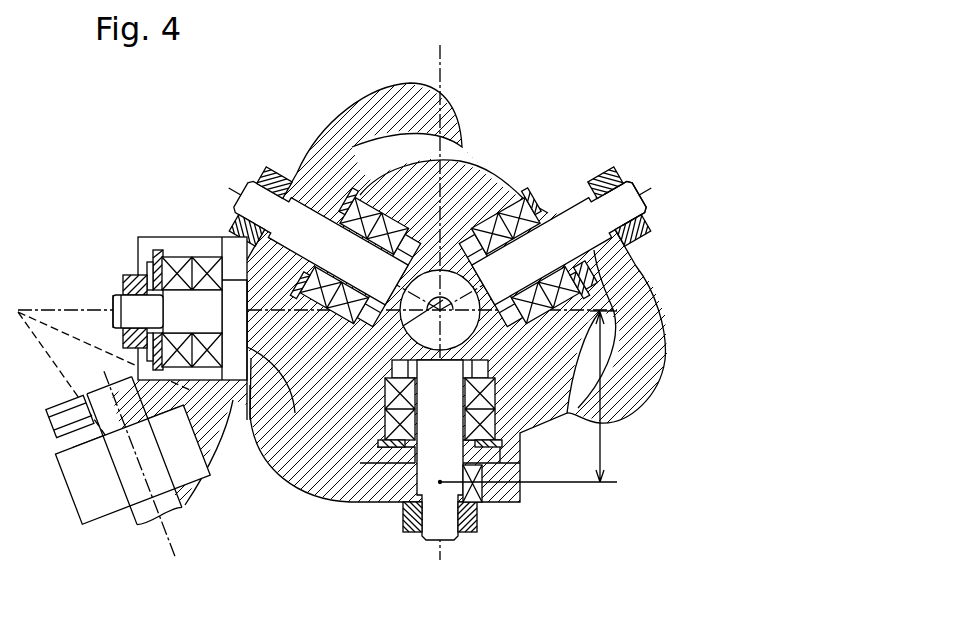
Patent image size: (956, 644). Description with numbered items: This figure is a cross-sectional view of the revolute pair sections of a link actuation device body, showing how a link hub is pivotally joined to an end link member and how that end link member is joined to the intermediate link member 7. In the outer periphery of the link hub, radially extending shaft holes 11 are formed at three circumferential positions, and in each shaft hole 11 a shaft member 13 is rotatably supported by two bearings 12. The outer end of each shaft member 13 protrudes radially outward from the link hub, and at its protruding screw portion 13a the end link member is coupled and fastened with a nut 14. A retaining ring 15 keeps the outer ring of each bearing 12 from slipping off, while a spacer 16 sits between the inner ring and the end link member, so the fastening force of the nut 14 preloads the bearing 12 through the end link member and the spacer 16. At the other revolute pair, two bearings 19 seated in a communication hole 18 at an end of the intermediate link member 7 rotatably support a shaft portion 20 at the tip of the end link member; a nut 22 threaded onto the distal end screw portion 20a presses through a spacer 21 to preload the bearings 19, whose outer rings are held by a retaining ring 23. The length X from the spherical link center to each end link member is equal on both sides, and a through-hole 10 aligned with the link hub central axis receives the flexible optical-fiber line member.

The intermediate link member 7 is at (207, 443).
The through-hole 10 is at (355, 435).
The shaft hole 11 is at (340, 245).
The bearing 12 is at (372, 224).
The shaft member 13 is at (305, 218).
The protruding screw portion 13a is at (625, 190).
The nut 14 is at (640, 237).
The retaining ring 15 is at (603, 312).
The spacer 16 is at (598, 268).
The communication hole 18 is at (221, 237).
The bearing 19 is at (190, 262).
The shaft portion 20 is at (173, 297).
The distal end screw portion 20a is at (117, 303).
The spacer 21 is at (140, 273).
The nut 22 is at (127, 283).
The retaining ring 23 is at (158, 262).
The length X is at (600, 443).